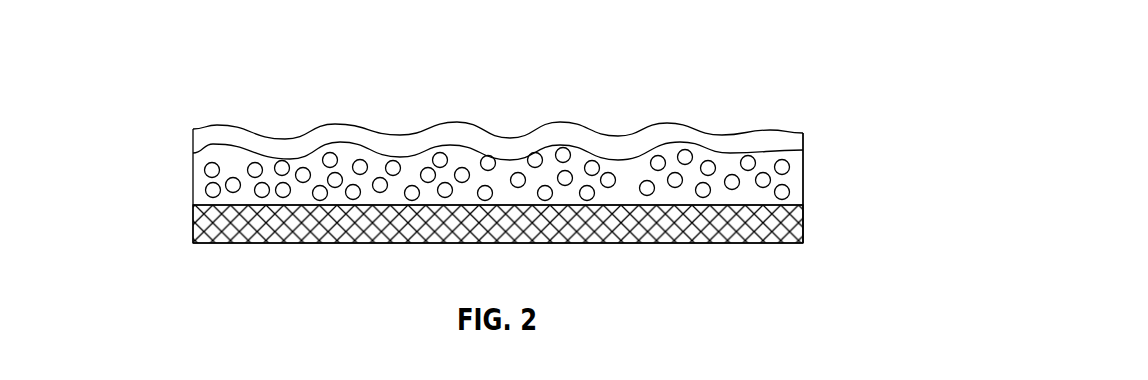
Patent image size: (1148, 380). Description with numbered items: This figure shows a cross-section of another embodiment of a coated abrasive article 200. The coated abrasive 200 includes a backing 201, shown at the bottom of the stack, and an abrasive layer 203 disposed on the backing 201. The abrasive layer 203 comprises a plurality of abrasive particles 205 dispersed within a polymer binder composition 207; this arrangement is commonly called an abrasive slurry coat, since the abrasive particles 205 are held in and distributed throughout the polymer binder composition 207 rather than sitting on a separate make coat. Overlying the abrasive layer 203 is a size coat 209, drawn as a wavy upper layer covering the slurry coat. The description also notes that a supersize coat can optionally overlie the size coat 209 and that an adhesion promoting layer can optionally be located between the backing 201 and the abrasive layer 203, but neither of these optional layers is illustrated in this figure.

The coated abrasive article 200 is at (722, 88).
The backing 201 is at (657, 245).
The abrasive layer 203 is at (817, 167).
The abrasive particles 205 is at (464, 170).
The polymer binder composition 207 is at (203, 180).
The size coat 209 is at (309, 128).